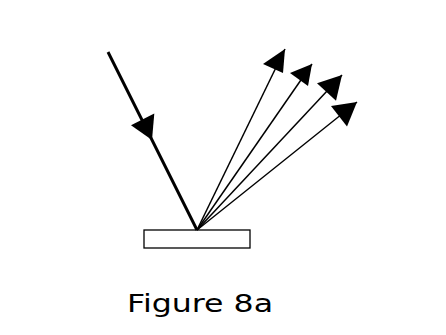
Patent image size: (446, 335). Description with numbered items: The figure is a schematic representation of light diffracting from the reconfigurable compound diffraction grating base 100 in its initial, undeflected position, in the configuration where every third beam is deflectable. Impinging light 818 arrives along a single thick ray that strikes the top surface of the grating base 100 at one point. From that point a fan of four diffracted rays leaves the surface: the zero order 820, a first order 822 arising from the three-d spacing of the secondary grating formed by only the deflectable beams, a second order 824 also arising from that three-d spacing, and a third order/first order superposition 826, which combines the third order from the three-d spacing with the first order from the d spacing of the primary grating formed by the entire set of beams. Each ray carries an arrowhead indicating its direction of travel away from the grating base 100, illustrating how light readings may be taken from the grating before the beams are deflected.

The reconfigurable compound diffraction grating base 100 is at (235, 240).
The impinging light 818 is at (131, 96).
The zero order 820 is at (264, 92).
The first order 822 is at (313, 64).
The second order 824 is at (340, 79).
The third order/first order superposition 826 is at (324, 130).